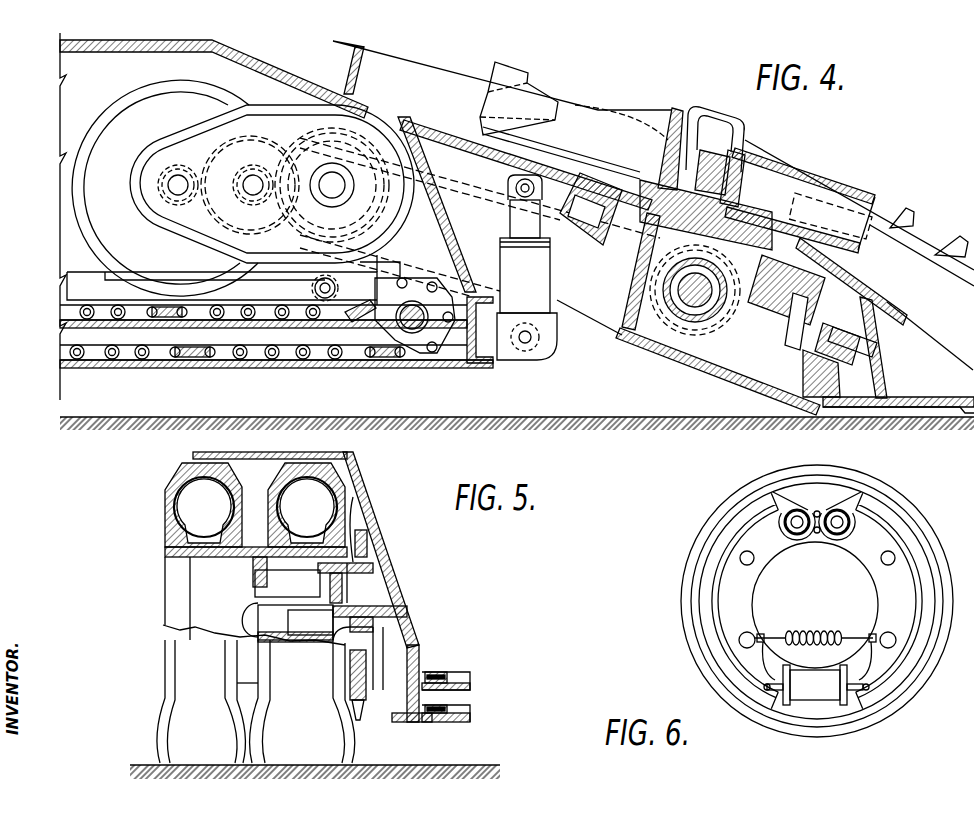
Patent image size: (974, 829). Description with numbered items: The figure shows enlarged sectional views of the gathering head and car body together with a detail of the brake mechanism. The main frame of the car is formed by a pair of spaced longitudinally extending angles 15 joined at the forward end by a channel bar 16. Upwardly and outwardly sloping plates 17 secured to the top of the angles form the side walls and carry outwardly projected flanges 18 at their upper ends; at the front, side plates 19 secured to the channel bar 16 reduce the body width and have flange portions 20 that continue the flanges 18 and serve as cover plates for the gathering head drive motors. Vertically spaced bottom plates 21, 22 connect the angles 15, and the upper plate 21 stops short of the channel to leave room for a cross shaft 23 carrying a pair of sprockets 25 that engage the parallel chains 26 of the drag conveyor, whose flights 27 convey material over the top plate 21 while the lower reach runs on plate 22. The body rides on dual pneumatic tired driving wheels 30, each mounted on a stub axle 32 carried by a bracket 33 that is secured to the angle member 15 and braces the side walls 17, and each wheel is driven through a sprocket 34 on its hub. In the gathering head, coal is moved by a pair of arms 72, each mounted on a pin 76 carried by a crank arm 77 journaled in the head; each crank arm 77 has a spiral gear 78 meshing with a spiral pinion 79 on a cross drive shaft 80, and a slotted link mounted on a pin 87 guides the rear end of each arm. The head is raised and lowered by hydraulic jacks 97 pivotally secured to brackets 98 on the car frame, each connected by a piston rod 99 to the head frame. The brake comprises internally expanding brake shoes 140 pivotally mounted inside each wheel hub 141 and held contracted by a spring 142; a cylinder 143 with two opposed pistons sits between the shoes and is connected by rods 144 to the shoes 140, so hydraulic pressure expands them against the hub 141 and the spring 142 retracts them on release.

In FIG. 5, the angles 15 is at (421, 649).
In FIG. 4, the channel bar 16 is at (478, 342).
In FIG. 5, the plates 17 is at (388, 569).
In FIG. 5, the flanges 18 is at (340, 453).
In FIG. 4, the plates 19 is at (450, 214).
In FIG. 4, the flange portions 20 is at (168, 42).
In FIG. 4, the bottom plate 21 is at (272, 322).
In FIG. 5, the bottom plate 21 is at (468, 690).
In FIG. 4, the bottom plate 22 is at (299, 369).
In FIG. 5, the bottom plate 22 is at (458, 722).
In FIG. 4, the cross shaft 23 is at (417, 335).
In FIG. 4, the sprockets 25 is at (433, 350).
In FIG. 5, the chains 26 is at (440, 676).
In FIG. 5, the scrapers or flights 27 is at (472, 672).
In FIG. 5, the pneumatic tired driving wheels 30 is at (172, 663).
In FIG. 5, the stub axle 32 is at (295, 620).
In FIG. 5, the bracket 33 is at (398, 607).
In FIG. 5, the sprocket 34 is at (371, 556).
In FIG. 4, the arms 72 is at (859, 213).
In FIG. 4, the pin 76 is at (717, 153).
In FIG. 4, the crank arm 77 is at (740, 207).
In FIG. 4, the spiral gear 78 is at (843, 368).
In FIG. 4, the spiral pinion 79 is at (692, 323).
In FIG. 4, the cross drive shaft 80 is at (650, 270).
In FIG. 4, the pin 87 is at (597, 218).
In FIG. 4, the hydraulic cylinders or jacks 97 is at (502, 267).
In FIG. 4, the brackets 98 is at (543, 354).
In FIG. 4, the piston rod 99 is at (512, 222).
In FIG. 5, the brake shoes 140 is at (362, 588).
In FIG. 6, the brake shoes 140 is at (873, 553).
In FIG. 5, the hub 141 is at (355, 527).
In FIG. 6, the hub 141 is at (868, 477).
In FIG. 6, the spring 142 is at (837, 632).
In FIG. 6, the cylinder 143 is at (820, 690).
In FIG. 6, the rods 144 is at (863, 672).